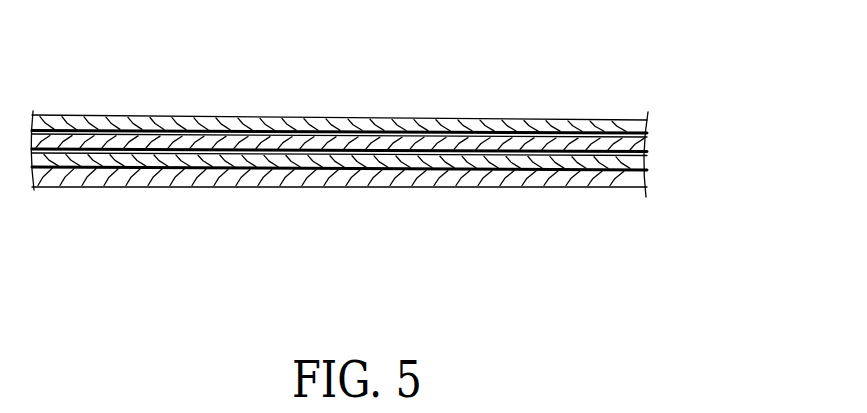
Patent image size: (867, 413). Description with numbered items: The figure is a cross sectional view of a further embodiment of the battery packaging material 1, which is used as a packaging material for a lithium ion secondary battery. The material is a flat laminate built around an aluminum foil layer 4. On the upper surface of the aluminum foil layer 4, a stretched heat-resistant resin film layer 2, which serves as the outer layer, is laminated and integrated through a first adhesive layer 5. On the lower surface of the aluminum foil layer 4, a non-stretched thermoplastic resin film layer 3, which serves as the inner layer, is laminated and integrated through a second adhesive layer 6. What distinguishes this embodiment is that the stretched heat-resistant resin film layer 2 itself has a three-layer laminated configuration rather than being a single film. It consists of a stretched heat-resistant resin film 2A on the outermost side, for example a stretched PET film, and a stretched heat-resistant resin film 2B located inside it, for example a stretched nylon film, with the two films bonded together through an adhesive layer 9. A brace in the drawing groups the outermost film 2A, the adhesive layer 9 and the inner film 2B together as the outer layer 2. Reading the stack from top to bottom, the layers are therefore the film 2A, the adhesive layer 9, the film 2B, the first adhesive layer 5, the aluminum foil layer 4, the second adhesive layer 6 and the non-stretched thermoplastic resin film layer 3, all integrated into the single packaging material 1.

The battery packaging material 1 is at (569, 92).
The stretched heat-resistant resin film layer 2 is at (417, 88).
The stretched heat-resistant resin film 2A is at (627, 123).
The adhesive layer 9 is at (645, 133).
The stretched heat-resistant resin film 2B is at (396, 129).
The first adhesive layer 5 is at (648, 154).
The aluminum foil layer 4 is at (649, 165).
The second adhesive layer 6 is at (649, 174).
The non-stretched thermoplastic resin film layer 3 is at (632, 192).